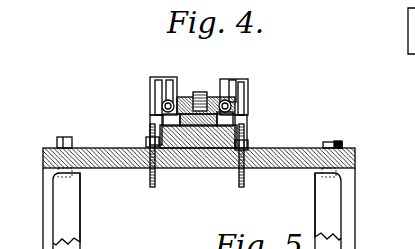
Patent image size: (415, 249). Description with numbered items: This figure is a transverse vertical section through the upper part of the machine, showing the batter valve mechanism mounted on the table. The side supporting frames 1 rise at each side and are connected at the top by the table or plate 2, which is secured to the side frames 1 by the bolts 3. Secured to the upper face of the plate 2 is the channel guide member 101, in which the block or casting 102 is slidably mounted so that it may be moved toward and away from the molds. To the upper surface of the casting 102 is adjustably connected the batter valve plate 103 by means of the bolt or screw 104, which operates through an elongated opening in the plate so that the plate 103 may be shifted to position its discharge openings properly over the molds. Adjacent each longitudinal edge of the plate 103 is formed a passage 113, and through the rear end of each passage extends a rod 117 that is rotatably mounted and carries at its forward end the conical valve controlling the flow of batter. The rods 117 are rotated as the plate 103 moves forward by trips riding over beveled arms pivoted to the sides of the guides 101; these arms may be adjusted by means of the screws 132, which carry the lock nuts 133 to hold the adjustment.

The side supporting frame 1 is at (70, 212).
The table or plate 2 is at (356, 166).
The bolt 3 is at (347, 136).
The channel guide member 101 is at (150, 107).
The block or casting 102 is at (150, 128).
The batter valve plate 103 is at (210, 92).
The bolt or screw 104 is at (200, 91).
The passage 113 is at (150, 93).
The valve rod 117 is at (173, 84).
The adjusting screw 132 is at (149, 180).
The lock nut 133 is at (146, 142).